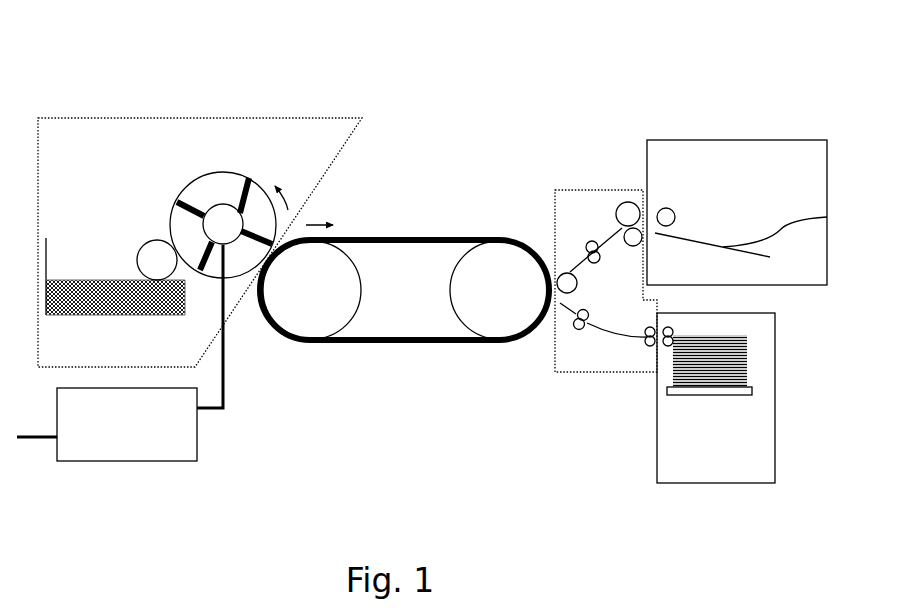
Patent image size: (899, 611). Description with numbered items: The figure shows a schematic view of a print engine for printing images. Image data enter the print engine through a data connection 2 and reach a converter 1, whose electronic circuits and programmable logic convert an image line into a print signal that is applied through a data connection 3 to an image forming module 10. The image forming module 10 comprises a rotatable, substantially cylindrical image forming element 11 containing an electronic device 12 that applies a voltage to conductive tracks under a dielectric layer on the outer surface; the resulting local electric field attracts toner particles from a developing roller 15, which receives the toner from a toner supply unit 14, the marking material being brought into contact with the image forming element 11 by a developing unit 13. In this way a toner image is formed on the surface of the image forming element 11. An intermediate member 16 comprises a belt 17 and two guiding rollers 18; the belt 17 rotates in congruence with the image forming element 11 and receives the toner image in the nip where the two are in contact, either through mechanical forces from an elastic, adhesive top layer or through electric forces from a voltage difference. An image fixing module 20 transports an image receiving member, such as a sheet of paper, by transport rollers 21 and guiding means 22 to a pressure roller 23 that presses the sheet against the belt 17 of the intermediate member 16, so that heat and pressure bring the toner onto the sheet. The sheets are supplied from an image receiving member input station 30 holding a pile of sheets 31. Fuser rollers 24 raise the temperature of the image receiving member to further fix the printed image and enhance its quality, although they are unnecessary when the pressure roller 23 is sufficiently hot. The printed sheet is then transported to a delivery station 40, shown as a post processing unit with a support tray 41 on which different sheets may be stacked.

The converter 1 is at (147, 478).
The data connection 2 is at (28, 440).
The data connection 3 is at (225, 376).
The image forming module 10 is at (166, 100).
The image forming element 11 is at (211, 172).
The electronic device 12 is at (253, 183).
The developing unit 13 is at (80, 232).
The toner supply unit 14 is at (84, 316).
The developing roller 15 is at (147, 240).
The intermediate member 16 is at (403, 184).
The belt 17 is at (440, 344).
The guiding rollers 18 is at (343, 328).
The image fixing module 20 is at (555, 392).
The transport rollers 21 is at (650, 344).
The guiding means 22 is at (598, 330).
The pressure roller 23 is at (559, 274).
The fuser rollers 24 is at (621, 202).
The image receiving member input station 30 is at (802, 429).
The pile of sheets 31 is at (747, 360).
The delivery station 40 is at (667, 116).
The support tray 41 is at (827, 217).